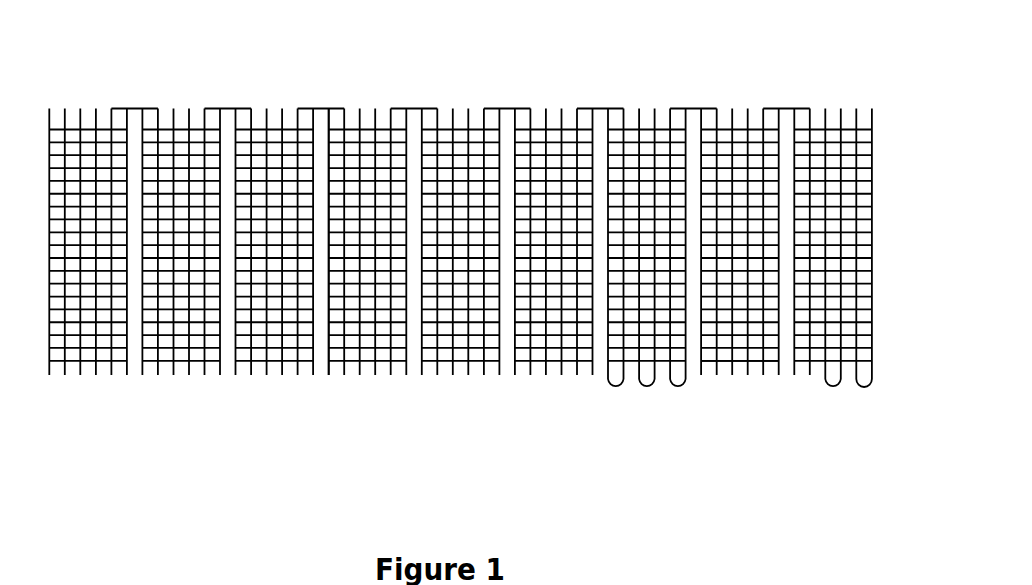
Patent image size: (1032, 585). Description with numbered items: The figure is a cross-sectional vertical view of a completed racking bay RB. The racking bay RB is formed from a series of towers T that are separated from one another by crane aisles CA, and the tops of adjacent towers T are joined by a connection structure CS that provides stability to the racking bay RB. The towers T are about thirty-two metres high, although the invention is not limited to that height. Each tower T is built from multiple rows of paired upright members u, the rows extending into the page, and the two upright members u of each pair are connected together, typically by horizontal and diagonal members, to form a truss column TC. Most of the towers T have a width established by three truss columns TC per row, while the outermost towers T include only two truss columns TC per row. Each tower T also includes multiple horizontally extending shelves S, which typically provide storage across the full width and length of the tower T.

The tower T is at (60, 103).
The shelf S is at (382, 141).
The connection structure CS is at (137, 108).
The crane aisle CA is at (695, 110).
The upright member u is at (342, 377).
The truss column TC is at (598, 440).
The racking bay RB is at (760, 402).